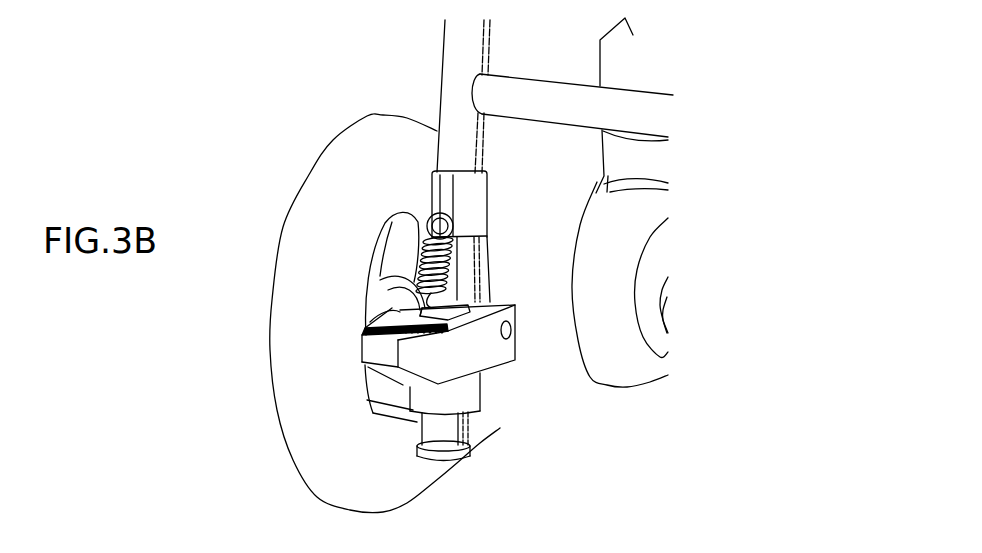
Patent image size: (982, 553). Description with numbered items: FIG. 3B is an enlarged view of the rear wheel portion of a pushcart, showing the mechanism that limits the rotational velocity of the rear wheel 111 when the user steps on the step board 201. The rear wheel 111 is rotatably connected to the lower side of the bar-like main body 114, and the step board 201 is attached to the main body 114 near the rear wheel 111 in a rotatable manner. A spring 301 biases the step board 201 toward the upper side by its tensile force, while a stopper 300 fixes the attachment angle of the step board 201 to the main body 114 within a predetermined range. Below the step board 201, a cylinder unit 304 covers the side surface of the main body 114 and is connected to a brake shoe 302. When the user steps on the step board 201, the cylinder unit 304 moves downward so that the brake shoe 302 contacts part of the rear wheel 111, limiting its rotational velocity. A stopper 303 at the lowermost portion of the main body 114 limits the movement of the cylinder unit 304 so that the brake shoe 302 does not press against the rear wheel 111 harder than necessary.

The rear wheel 111 is at (281, 233).
The main body 114 is at (457, 112).
The step board 201 is at (373, 345).
The stopper 300 is at (465, 302).
The spring 301 is at (422, 250).
The brake shoe 302 is at (417, 417).
The stopper 303 is at (463, 462).
The cylinder unit 304 is at (468, 400).